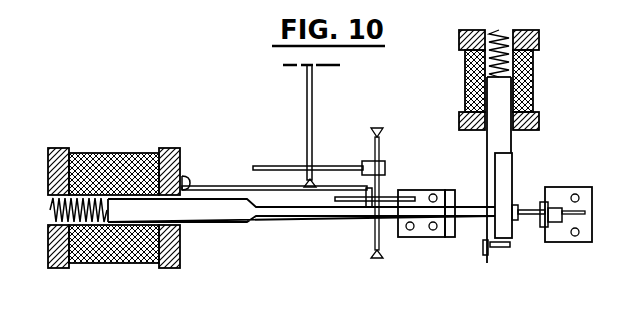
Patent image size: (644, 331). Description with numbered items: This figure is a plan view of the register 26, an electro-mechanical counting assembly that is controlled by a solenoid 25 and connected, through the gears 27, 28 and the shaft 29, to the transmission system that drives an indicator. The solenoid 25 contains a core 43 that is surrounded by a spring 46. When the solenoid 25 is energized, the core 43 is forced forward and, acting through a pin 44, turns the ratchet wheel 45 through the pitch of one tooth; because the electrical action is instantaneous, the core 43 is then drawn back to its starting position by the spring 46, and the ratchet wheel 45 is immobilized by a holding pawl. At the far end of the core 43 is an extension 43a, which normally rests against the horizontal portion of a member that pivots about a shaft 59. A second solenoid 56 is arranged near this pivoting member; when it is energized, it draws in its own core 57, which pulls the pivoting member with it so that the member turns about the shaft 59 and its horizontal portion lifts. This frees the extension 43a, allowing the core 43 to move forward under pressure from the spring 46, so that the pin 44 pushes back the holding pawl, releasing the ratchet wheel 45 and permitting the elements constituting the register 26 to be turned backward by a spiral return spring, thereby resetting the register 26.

The solenoid 25 is at (99, 162).
The spring 46 is at (95, 200).
The core 43 is at (195, 212).
The extension 43a is at (473, 215).
The shaft 29 is at (307, 133).
The gear 28 is at (280, 167).
The gear 27 is at (373, 167).
The ratchet wheel 45 is at (390, 195).
The pin 44 is at (363, 212).
The register 26 is at (408, 93).
The solenoid 56 is at (532, 75).
The shaft 59 is at (515, 211).
The core 57 is at (508, 246).